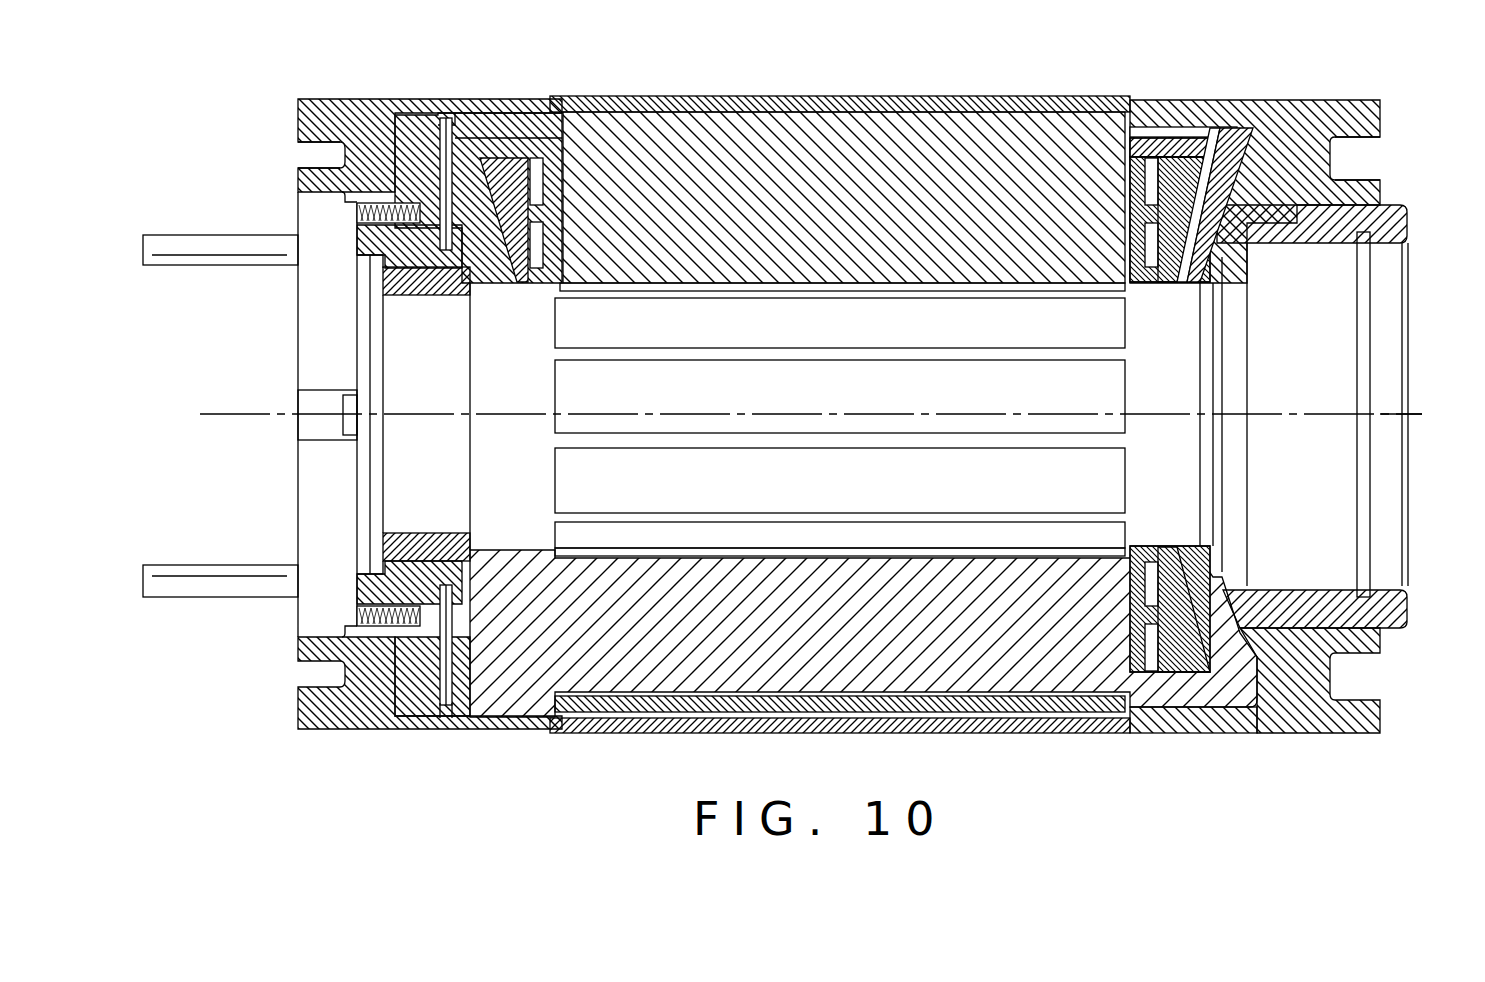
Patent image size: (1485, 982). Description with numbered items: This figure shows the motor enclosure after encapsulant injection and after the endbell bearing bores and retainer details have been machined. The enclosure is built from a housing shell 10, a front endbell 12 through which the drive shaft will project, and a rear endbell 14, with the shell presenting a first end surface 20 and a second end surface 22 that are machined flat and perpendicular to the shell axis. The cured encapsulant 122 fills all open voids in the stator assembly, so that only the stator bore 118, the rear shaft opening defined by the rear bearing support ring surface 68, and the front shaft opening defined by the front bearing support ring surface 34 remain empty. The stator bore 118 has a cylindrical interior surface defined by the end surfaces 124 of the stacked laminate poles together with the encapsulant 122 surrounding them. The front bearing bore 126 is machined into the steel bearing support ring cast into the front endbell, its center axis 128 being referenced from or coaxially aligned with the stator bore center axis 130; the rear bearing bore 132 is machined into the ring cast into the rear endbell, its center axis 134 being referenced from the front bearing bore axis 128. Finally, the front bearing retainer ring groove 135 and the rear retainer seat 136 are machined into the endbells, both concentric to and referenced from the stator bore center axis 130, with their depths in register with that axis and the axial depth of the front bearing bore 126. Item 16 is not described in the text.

The housing shell 10 is at (858, 96).
The front endbell 12 is at (1290, 100).
The rear endbell 14 is at (318, 98).
The housing 16 is at (686, 96).
The first end surface 20 is at (1140, 99).
The second end surface 22 is at (548, 98).
The front bearing support ring surface 34 is at (1383, 583).
The rear bearing support ring surface 68 is at (425, 535).
The stator bore 118 is at (945, 312).
The cured encapsulant 122 is at (317, 152).
The end surfaces of the stacked laminate poles 124 is at (1040, 395).
The front bearing bore 126 is at (1323, 246).
The front bearing bore center axis 128 is at (1422, 413).
The stator bore center axis 130 is at (787, 413).
The rear bearing bore 132 is at (418, 297).
The rear bearing bore center axis 134 is at (407, 413).
The front bearing retainer ring groove 135 is at (1360, 360).
The rear retainer seat 136 is at (368, 272).